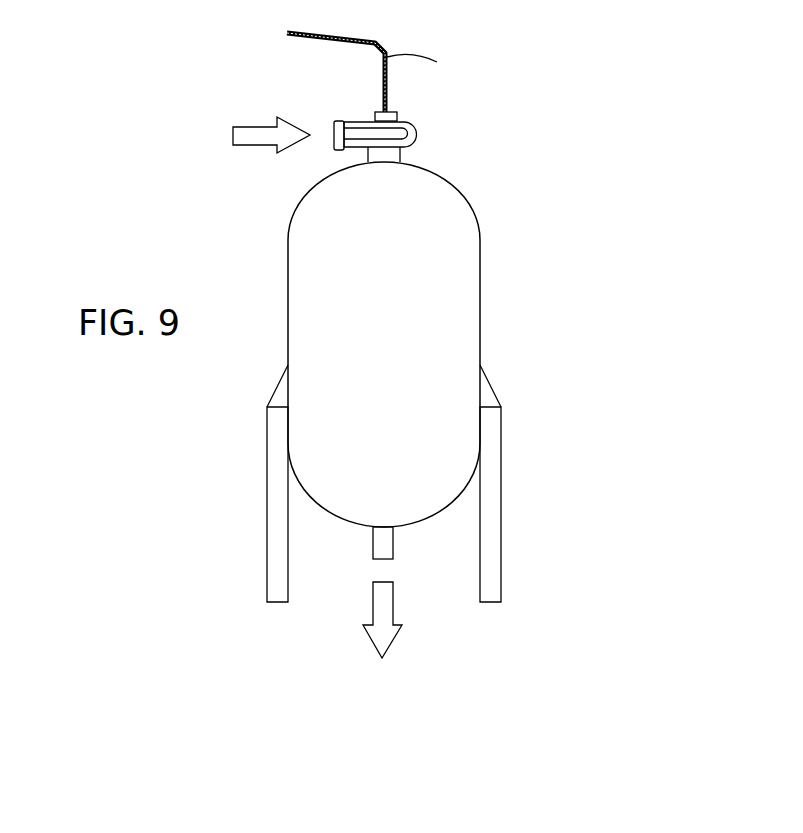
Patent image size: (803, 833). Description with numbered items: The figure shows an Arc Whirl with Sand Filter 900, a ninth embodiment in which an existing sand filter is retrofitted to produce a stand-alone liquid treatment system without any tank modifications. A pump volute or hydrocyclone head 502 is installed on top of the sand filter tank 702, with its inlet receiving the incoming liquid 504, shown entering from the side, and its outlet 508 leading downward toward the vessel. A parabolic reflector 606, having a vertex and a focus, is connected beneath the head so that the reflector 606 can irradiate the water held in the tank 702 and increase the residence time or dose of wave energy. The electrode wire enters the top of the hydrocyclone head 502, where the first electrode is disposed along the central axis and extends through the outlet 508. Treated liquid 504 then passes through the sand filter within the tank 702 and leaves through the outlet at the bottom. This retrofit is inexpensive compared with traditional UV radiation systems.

The Arc Whirl with Sand Filter 900 is at (573, 88).
The pump volute or hydrocyclone head 502 is at (372, 120).
The liquid 504 is at (403, 158).
The outlet 508 is at (368, 163).
The parabolic reflector 606 is at (470, 209).
The tank 702 is at (457, 298).